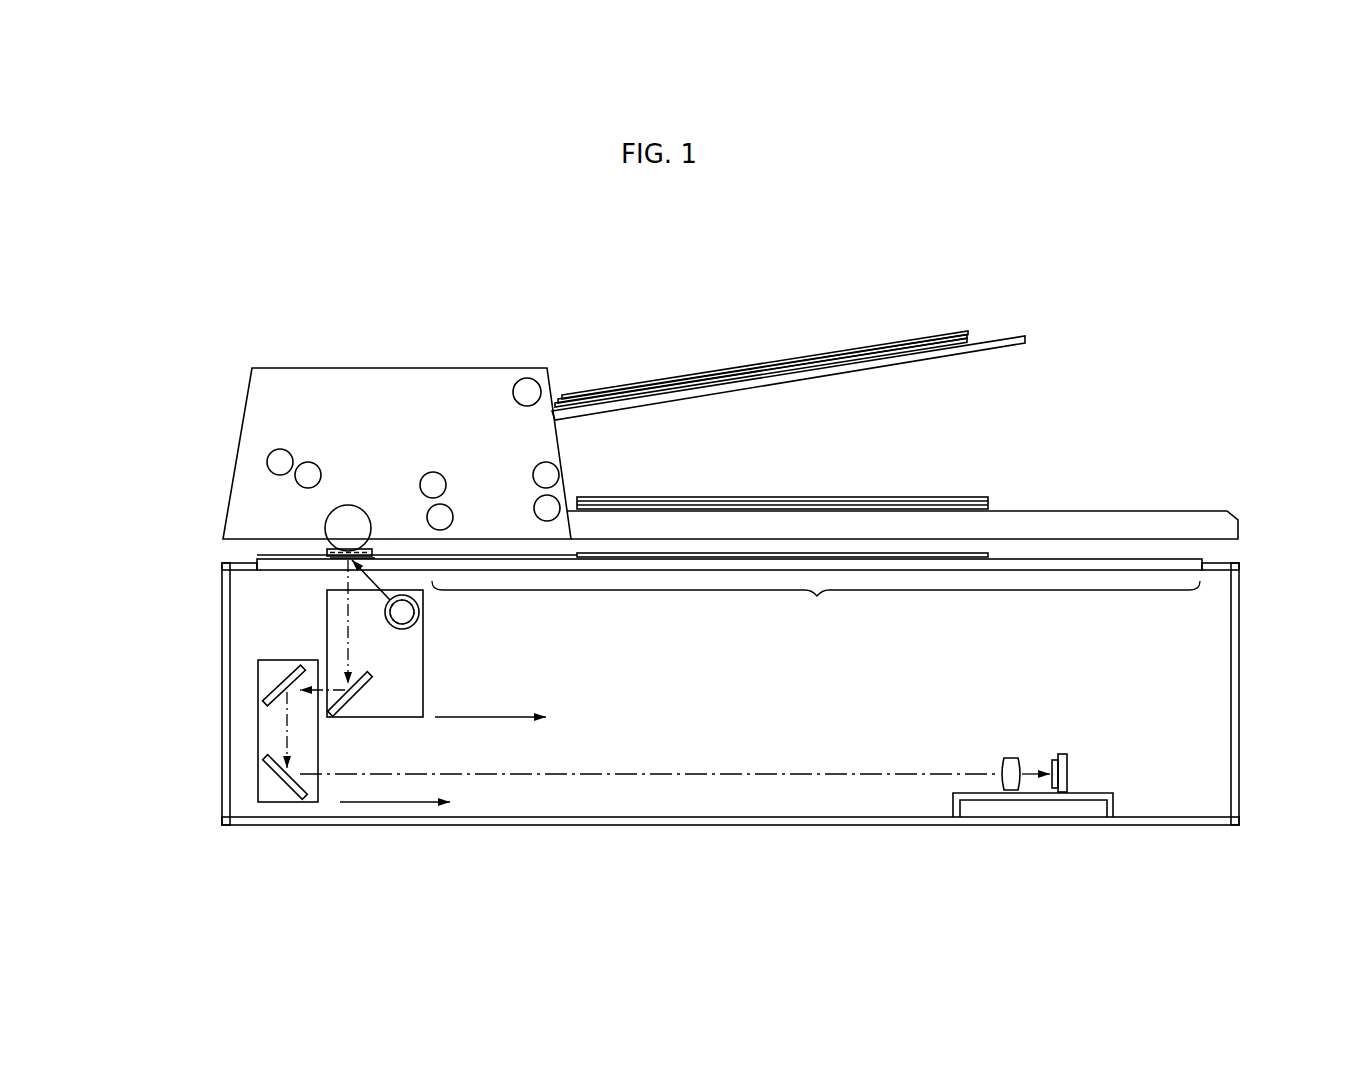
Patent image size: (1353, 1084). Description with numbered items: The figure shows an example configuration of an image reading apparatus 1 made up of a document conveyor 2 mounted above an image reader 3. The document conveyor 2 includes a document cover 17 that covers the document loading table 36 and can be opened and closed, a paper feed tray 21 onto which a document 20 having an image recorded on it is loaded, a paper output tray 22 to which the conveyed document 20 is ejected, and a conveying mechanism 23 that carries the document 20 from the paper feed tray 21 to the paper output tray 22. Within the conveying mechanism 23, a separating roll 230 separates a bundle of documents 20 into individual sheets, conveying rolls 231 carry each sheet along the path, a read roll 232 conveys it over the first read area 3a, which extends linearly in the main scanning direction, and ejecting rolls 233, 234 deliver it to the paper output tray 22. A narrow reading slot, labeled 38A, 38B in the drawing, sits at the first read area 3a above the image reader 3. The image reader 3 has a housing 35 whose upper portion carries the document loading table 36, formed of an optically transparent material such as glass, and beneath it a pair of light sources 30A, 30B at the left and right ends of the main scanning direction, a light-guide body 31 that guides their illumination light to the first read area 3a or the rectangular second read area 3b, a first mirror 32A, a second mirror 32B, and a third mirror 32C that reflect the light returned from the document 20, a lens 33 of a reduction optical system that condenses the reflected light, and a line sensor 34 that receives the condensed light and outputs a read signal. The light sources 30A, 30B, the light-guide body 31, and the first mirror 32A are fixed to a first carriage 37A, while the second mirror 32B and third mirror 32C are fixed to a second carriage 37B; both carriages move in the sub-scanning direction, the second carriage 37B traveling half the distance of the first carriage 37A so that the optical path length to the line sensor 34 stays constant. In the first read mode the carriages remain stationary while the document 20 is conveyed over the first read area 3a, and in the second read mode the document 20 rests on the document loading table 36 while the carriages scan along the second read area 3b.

The image reading apparatus 1 is at (1114, 241).
The document conveyor 2 is at (176, 346).
The image reader 3 is at (191, 610).
The first read area 3a is at (347, 559).
The second read area 3b is at (816, 605).
The document cover 17 is at (1141, 470).
The document 20 is at (927, 336).
The paper feed tray 21 is at (1002, 338).
The paper output tray 22 is at (1098, 515).
The conveying mechanism 23 is at (340, 386).
The separating roll 230 is at (527, 377).
The conveying rolls 231 is at (298, 476).
The read roll 232 is at (335, 520).
The ejecting rolls 233 is at (445, 508).
The ejecting rolls 234 is at (553, 477).
The light source 30A is at (417, 626).
The light source 30B is at (461, 630).
The light-guide body 31 is at (420, 615).
The first mirror 32A is at (352, 718).
The second mirror 32B is at (264, 690).
The third mirror 32C is at (264, 763).
The lens 33 is at (1010, 757).
The line sensor 34 is at (1055, 754).
The housing 35 is at (1240, 593).
The document loading table 36 is at (1193, 562).
The first carriage 37A is at (397, 719).
The second carriage 37B is at (288, 803).
The reading window 38A is at (327, 552).
The white reference plate 38B is at (268, 553).